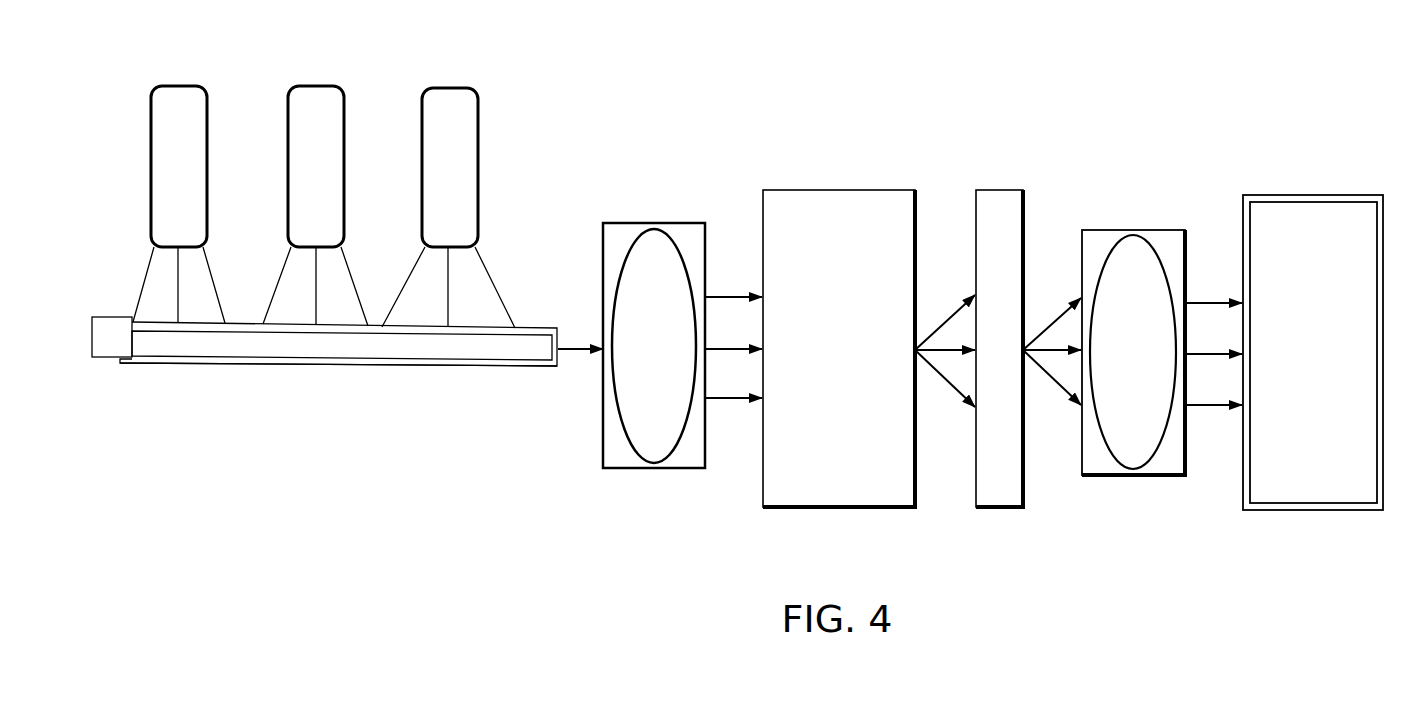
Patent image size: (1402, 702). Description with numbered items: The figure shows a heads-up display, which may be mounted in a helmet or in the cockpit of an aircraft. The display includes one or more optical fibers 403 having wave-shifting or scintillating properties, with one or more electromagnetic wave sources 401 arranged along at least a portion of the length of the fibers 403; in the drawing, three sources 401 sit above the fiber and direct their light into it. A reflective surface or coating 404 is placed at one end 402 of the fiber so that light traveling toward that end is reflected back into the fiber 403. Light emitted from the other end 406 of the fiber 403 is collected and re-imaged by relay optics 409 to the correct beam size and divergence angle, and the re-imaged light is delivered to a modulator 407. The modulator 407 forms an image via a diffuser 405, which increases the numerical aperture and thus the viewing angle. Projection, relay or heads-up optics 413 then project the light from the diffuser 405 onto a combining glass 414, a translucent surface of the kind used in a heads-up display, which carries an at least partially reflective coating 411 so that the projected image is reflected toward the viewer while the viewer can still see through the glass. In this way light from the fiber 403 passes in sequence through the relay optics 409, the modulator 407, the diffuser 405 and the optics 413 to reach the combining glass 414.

The electromagnetic wave source 401 is at (178, 85).
The one end of the fiber 402 is at (127, 366).
The optical fiber 403 is at (320, 357).
The reflective surface or coating 404 is at (96, 358).
The diffuser 405 is at (1001, 189).
The other end of the fiber 406 is at (556, 367).
The modulator 407 is at (821, 189).
The relay optics 409 is at (677, 222).
The partially reflective coating 411 is at (1313, 325).
The projection, relay or heads-up optics 413 is at (1150, 229).
The combining glass 414 is at (1294, 448).